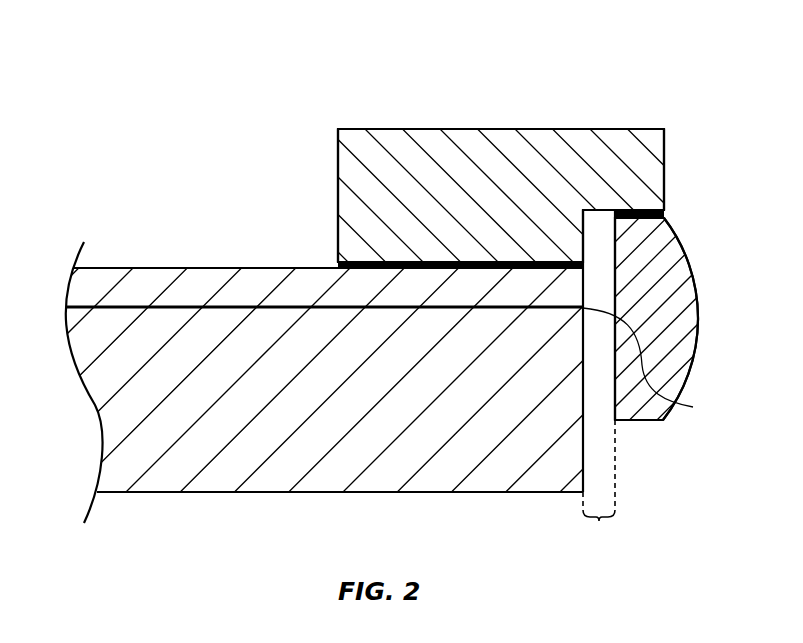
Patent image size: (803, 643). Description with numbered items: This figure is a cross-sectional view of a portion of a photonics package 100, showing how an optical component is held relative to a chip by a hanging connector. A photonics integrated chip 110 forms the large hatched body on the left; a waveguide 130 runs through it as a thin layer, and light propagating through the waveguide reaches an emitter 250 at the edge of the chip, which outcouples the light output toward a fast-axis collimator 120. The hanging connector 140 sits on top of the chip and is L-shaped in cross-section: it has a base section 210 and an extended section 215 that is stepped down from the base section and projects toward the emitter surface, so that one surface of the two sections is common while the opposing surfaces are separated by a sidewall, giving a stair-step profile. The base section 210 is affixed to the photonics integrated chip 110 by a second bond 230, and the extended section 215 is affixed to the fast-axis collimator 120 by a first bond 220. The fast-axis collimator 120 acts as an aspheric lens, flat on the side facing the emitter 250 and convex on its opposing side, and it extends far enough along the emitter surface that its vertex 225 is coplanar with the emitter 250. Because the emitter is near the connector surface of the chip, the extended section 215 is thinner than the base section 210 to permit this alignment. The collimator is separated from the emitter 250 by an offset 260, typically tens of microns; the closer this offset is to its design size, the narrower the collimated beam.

The photonics package 100 is at (156, 56).
The photonics integrated chip 110 is at (92, 402).
The fast-axis collimator 120 is at (640, 421).
The waveguide 130 is at (68, 307).
The hanging connector 140 is at (492, 129).
The base section 210 is at (338, 193).
The extended section 215 is at (665, 167).
The first bond 220 is at (664, 212).
The vertex 225 is at (698, 308).
The second bond 230 is at (339, 263).
The emitter 250 is at (657, 363).
The offset 260 is at (602, 377).